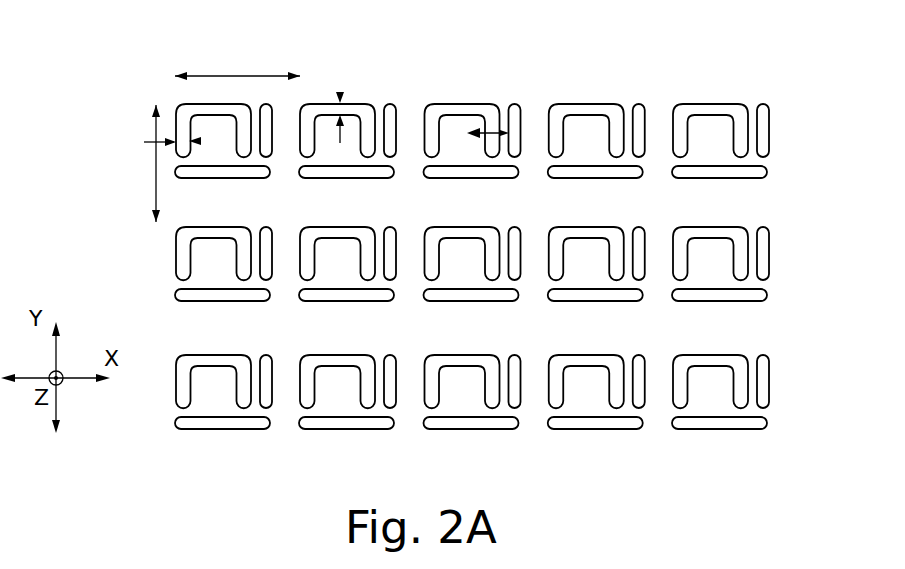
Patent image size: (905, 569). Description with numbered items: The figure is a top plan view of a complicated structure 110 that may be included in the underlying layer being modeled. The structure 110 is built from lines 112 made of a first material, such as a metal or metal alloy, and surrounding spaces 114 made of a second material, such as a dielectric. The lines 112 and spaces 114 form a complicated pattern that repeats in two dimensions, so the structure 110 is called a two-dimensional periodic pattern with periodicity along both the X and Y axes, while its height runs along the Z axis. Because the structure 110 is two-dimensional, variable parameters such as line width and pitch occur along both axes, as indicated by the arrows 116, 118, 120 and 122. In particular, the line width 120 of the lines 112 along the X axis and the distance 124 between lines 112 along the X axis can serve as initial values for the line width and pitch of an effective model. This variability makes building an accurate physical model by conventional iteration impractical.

The structure 110 is at (620, 70).
The lines 112 is at (769, 131).
The spaces 114 is at (748, 211).
The arrow 116 is at (232, 76).
The arrow 118 is at (156, 186).
The line width 120 is at (195, 141).
The arrow 122 is at (341, 95).
The distance between lines 124 is at (491, 103).